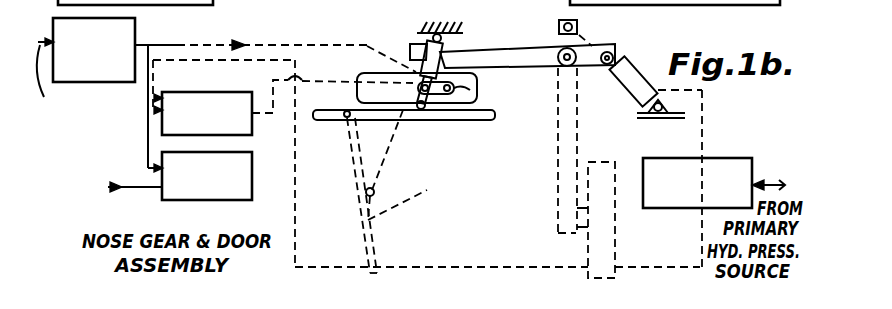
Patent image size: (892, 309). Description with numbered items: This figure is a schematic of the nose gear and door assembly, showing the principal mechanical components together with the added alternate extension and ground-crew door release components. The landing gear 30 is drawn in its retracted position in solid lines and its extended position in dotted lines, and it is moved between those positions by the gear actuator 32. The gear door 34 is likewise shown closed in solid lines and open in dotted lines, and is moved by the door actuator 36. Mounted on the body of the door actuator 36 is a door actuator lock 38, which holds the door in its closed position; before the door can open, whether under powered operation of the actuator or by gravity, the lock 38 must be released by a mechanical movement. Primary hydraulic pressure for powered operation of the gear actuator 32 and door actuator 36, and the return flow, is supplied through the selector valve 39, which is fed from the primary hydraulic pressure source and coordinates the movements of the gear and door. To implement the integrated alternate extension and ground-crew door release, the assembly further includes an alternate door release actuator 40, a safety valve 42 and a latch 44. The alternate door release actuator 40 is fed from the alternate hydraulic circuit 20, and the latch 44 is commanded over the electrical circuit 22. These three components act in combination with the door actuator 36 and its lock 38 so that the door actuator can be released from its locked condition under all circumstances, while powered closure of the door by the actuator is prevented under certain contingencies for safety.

The alternate hydraulic circuit 20 is at (92, 86).
The electrical circuit 22 is at (99, 187).
The landing gear 30 is at (543, 68).
The gear actuator 32 is at (627, 62).
The gear door 34 is at (443, 117).
The door actuator 36 is at (441, 52).
The door actuator lock 38 is at (478, 90).
The selector valve 39 is at (728, 157).
The alternate door release actuator 40 is at (136, 25).
The safety valve 42 is at (252, 131).
The latch 44 is at (252, 193).